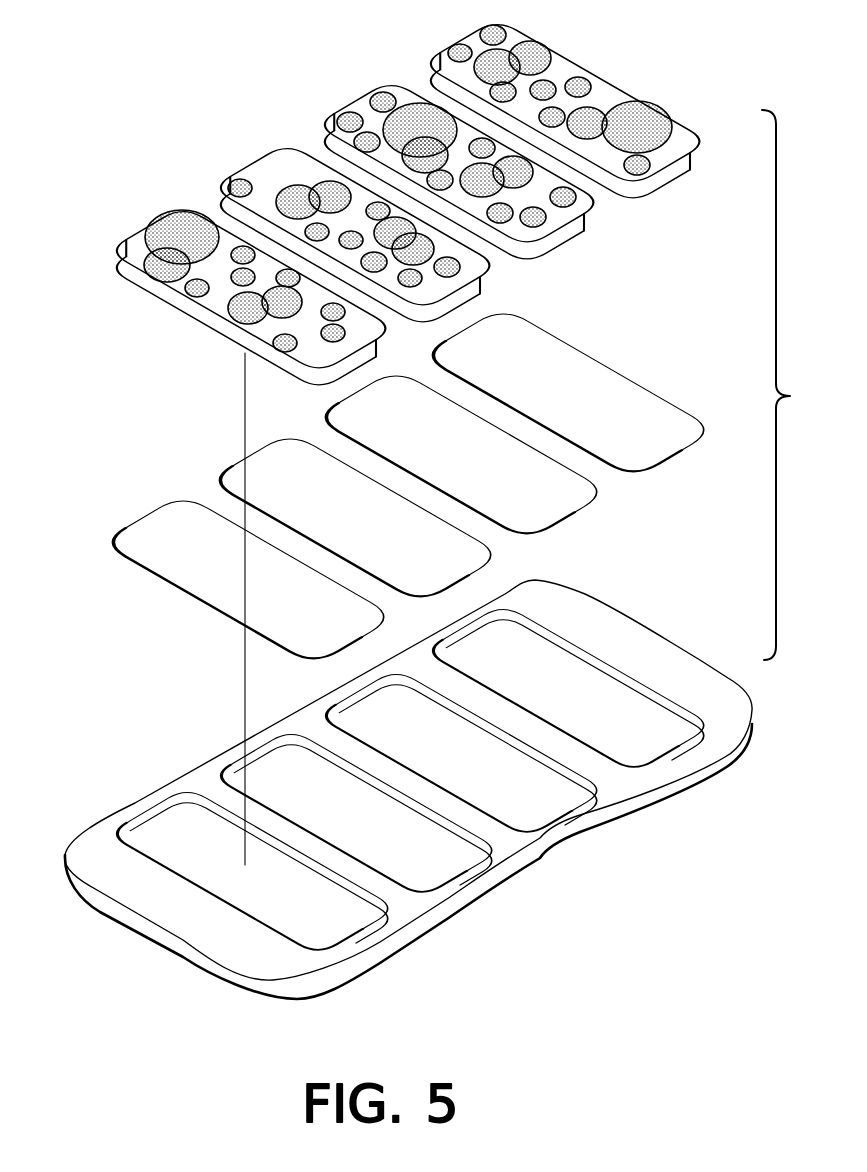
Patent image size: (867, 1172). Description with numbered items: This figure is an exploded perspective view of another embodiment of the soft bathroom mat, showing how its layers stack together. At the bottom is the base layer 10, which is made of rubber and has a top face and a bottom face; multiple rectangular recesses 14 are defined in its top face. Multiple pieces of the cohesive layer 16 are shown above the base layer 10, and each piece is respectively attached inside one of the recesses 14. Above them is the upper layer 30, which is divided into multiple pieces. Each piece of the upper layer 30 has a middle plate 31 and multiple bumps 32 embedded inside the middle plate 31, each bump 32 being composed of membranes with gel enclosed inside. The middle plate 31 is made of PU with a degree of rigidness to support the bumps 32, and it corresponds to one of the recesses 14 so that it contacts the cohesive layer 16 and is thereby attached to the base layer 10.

The base layer 10 is at (670, 657).
The rectangular recesses 14 is at (602, 665).
The cohesive layer 16 is at (618, 390).
The upper layer 30 is at (576, 105).
The middle plate 31 is at (683, 140).
The bumps 32 is at (586, 84).